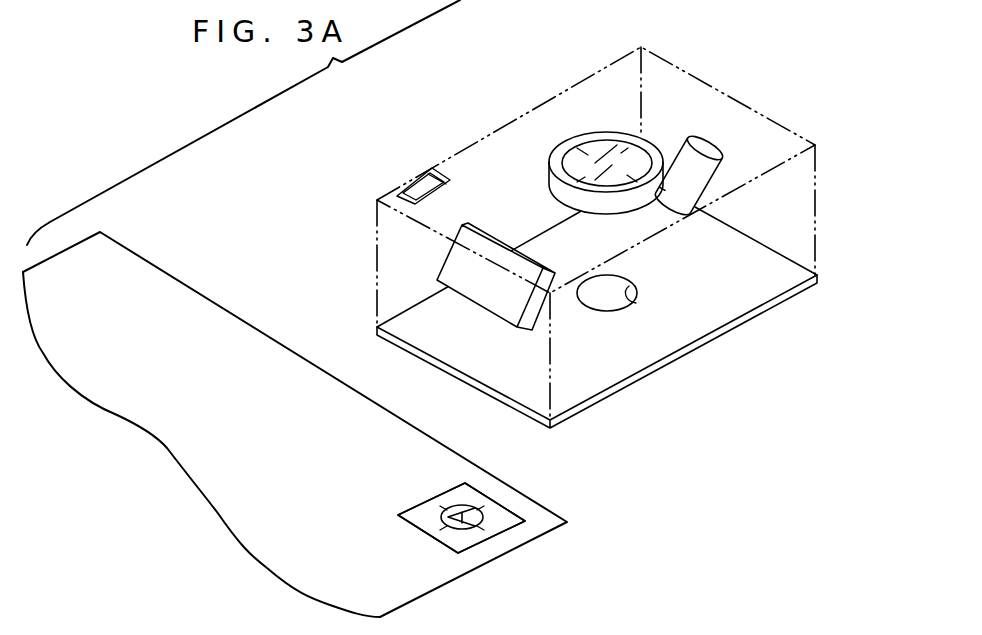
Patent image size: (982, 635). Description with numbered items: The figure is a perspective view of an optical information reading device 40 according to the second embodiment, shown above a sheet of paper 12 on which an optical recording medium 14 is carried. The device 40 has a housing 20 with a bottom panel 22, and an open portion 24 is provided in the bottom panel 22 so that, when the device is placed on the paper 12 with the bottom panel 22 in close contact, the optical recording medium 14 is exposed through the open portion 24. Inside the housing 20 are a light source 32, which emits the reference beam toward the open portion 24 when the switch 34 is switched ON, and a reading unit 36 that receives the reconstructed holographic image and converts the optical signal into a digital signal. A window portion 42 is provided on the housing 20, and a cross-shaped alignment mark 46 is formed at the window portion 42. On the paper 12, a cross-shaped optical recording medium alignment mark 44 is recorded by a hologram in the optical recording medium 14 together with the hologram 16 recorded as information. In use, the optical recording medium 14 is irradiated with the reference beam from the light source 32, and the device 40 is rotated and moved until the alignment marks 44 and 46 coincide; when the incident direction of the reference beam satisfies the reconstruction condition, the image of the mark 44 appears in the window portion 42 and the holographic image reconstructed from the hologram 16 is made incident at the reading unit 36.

The paper 12 is at (412, 590).
The optical recording medium 14 is at (465, 543).
The hologram 16 is at (463, 505).
The housing 20 is at (493, 127).
The bottom panel 22 is at (643, 355).
The open portion 24 is at (640, 291).
The light source 32 is at (702, 147).
The switch 34 is at (429, 168).
The reading unit 36 is at (475, 293).
The optical information reading device 40 is at (822, 89).
The window portion 42 is at (578, 136).
The optical recording medium alignment mark 44 is at (493, 522).
The alignment mark 46 is at (628, 128).